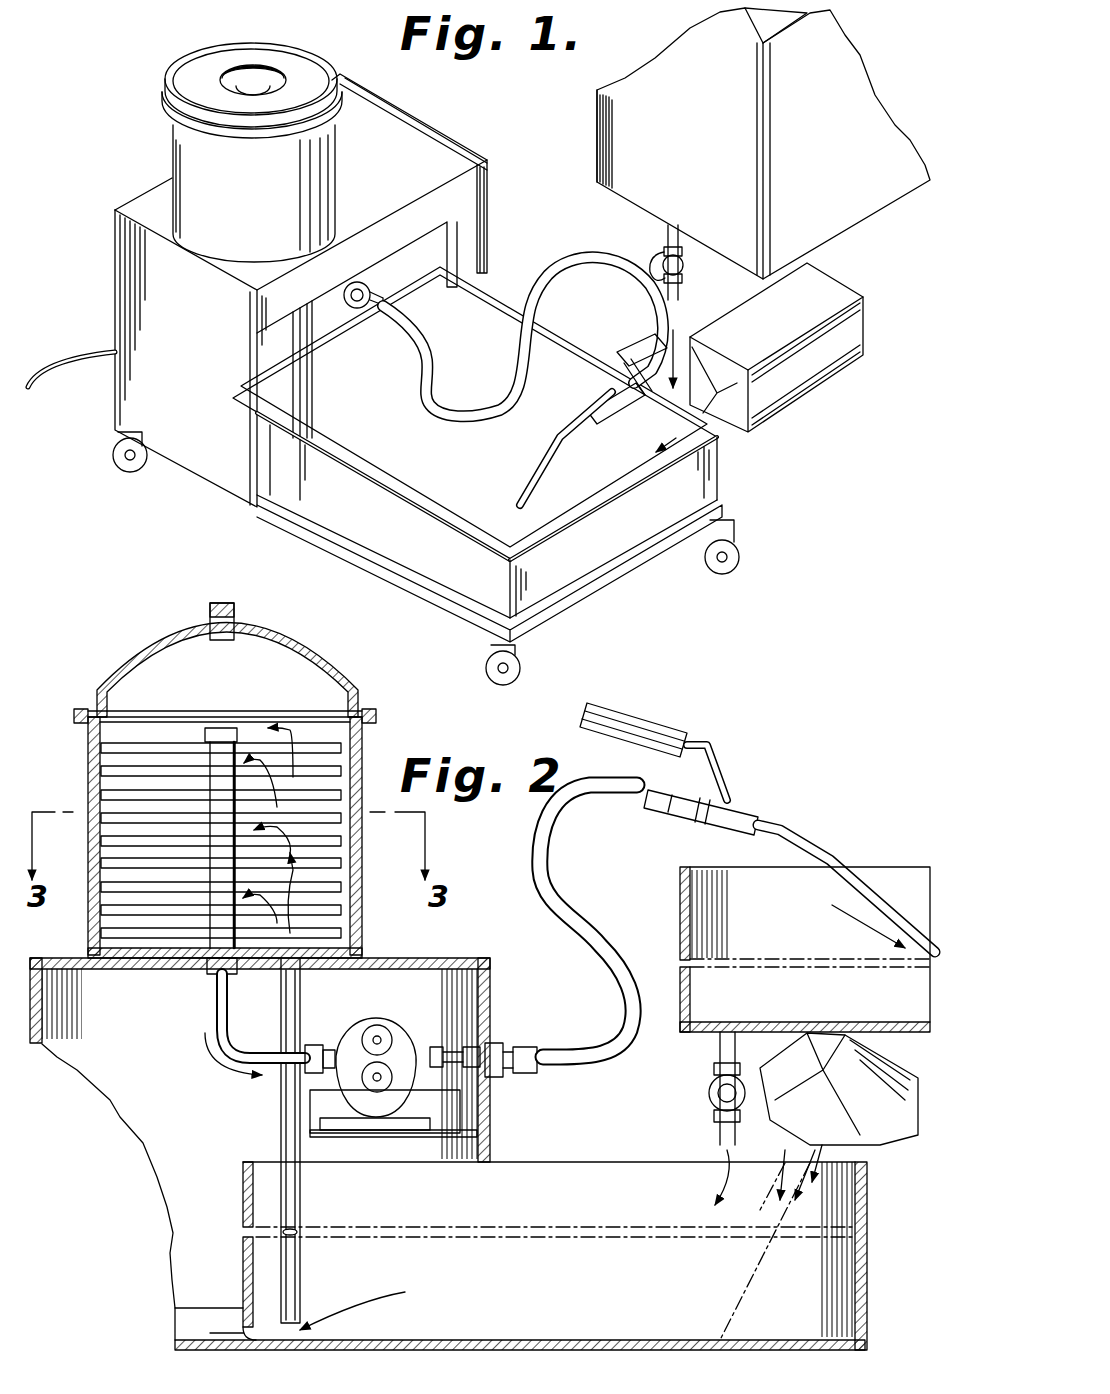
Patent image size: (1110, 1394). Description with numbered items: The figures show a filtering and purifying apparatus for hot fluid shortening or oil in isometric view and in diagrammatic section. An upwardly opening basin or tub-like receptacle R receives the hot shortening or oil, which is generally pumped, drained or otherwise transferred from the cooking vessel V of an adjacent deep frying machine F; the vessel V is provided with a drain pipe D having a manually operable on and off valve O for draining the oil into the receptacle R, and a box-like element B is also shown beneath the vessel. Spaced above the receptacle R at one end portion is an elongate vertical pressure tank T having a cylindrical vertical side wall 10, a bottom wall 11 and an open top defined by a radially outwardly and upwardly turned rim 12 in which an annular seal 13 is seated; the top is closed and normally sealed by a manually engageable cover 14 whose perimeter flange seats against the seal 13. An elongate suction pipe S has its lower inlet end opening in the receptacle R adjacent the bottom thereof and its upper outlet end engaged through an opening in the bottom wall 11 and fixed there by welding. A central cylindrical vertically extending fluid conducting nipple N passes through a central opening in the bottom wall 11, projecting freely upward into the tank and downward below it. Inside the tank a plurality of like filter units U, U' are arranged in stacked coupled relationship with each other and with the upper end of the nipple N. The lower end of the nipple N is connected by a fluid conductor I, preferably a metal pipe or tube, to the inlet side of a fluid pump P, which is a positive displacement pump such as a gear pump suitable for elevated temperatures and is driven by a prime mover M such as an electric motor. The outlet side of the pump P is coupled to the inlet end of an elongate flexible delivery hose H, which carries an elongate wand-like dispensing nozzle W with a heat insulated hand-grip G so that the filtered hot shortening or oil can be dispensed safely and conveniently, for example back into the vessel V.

In FIG. 1, the cylindrical vertical side wall 10 is at (200, 180).
In FIG. 2, the cylindrical vertical side wall 10 is at (92, 745).
In FIG. 2, the bottom wall 11 is at (127, 965).
In FIG. 1, the rim 12 is at (170, 128).
In FIG. 2, the rim 12 is at (78, 711).
In FIG. 2, the annular seal 13 is at (142, 720).
In FIG. 1, the cover 14 is at (293, 55).
In FIG. 2, the cover 14 is at (300, 653).
In FIG. 1, the pressure tank T is at (172, 157).
In FIG. 1, the suction pipe S is at (318, 383).
In FIG. 2, the suction pipe S is at (278, 1121).
In FIG. 2, the fluid pump P is at (410, 988).
In FIG. 2, the prime mover M is at (373, 1118).
In FIG. 1, the receptacle R is at (390, 538).
In FIG. 1, the flexible delivery hose H is at (433, 412).
In FIG. 2, the flexible delivery hose H is at (555, 865).
In FIG. 1, the hand-grip G is at (630, 350).
In FIG. 2, the hand-grip G is at (665, 724).
In FIG. 1, the wand-like dispensing nozzle W is at (520, 478).
In FIG. 2, the wand-like dispensing nozzle W is at (828, 840).
In FIG. 1, the cooking vessel V is at (866, 78).
In FIG. 2, the cooking vessel V is at (905, 862).
In FIG. 1, the deep frying machine F is at (592, 148).
In FIG. 1, the drain pipe D is at (656, 228).
In FIG. 2, the drain pipe D is at (713, 1044).
In FIG. 1, the drain valve O is at (690, 268).
In FIG. 2, the drain valve O is at (710, 1093).
In FIG. 1, the block B is at (795, 397).
In FIG. 2, the block B is at (850, 1112).
In FIG. 2, the filter units U is at (213, 840).
In FIG. 2, the central baffle pipe U' is at (241, 809).
In FIG. 2, the nipple N is at (207, 971).
In FIG. 2, the fluid conductor I is at (213, 1008).